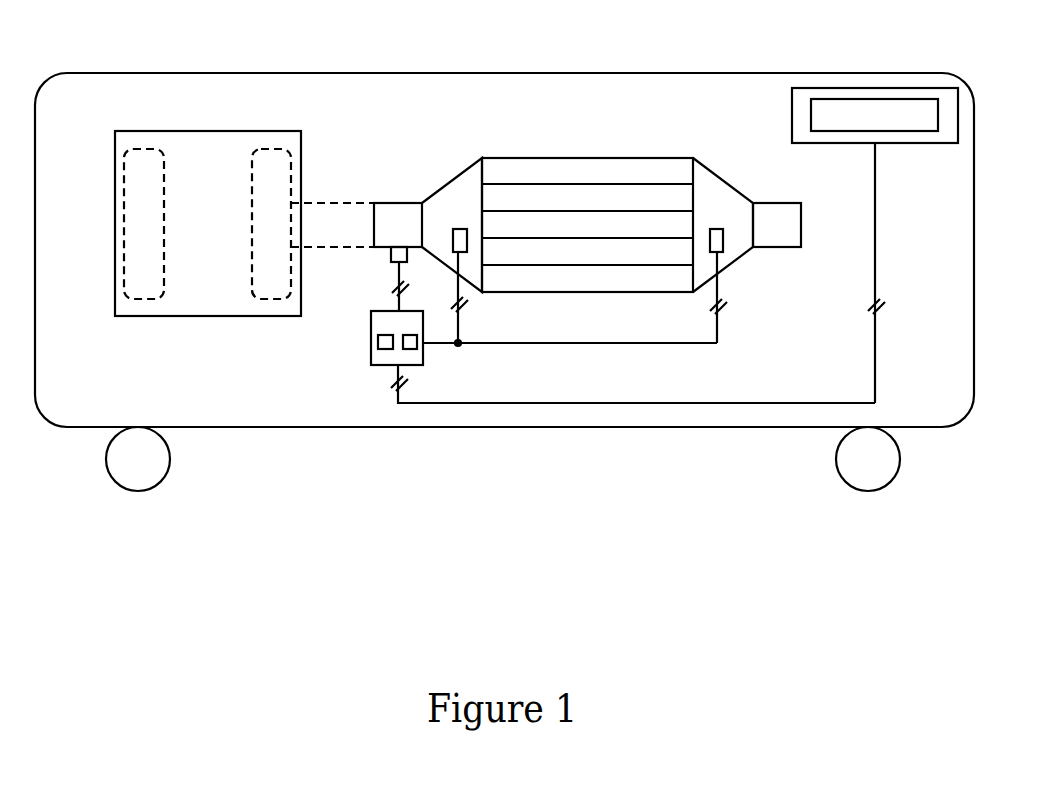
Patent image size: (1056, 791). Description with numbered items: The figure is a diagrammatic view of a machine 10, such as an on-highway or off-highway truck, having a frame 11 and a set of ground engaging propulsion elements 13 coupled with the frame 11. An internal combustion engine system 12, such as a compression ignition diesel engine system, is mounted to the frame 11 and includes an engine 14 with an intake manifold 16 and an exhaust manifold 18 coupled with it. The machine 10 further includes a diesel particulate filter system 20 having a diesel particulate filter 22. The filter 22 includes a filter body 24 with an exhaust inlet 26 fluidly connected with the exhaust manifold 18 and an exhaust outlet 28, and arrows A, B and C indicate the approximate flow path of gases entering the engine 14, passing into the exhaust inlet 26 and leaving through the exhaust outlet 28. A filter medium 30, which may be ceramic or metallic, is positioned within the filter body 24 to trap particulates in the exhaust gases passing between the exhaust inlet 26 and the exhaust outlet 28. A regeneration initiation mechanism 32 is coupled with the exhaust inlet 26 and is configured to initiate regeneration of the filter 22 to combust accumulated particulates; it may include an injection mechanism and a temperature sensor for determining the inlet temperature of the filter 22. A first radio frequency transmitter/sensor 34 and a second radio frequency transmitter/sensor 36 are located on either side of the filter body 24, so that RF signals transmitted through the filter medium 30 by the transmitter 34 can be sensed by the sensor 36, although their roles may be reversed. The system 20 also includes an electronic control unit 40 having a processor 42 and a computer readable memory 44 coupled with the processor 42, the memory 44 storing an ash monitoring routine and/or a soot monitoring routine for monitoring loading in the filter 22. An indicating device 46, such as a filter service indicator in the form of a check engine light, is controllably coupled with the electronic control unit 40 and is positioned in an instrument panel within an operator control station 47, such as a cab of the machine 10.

The machine 10 is at (226, 514).
The frame 11 is at (975, 198).
The internal combustion engine system 12 is at (266, 130).
The ground engaging propulsion elements 13 is at (901, 458).
The engine 14 is at (215, 317).
The intake manifold 16 is at (146, 304).
The exhaust manifold 18 is at (284, 304).
The diesel particulate filter system 20 is at (720, 347).
The diesel particulate filter 22 is at (450, 160).
The filter body 24 is at (721, 172).
The exhaust inlet 26 is at (386, 203).
The exhaust outlet 28 is at (769, 248).
The filter medium 30 is at (540, 266).
The regeneration initiation mechanism 32 is at (391, 256).
The first radio frequency transmitter/sensor 34 is at (461, 229).
The second radio frequency transmitter/sensor 36 is at (711, 229).
The electronic control unit 40 is at (417, 340).
The processor 42 is at (386, 365).
The computer readable memory 44 is at (417, 333).
The indicating device 46 is at (918, 131).
The operator control station 47 is at (920, 88).